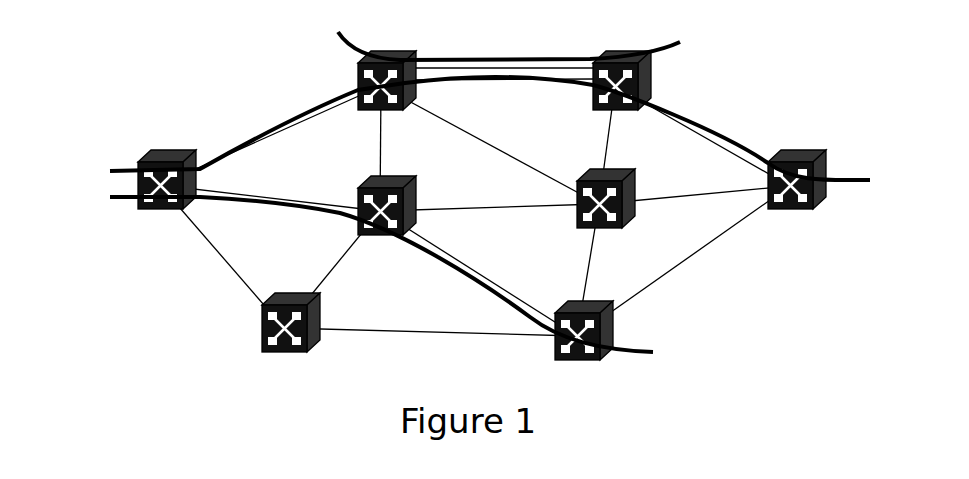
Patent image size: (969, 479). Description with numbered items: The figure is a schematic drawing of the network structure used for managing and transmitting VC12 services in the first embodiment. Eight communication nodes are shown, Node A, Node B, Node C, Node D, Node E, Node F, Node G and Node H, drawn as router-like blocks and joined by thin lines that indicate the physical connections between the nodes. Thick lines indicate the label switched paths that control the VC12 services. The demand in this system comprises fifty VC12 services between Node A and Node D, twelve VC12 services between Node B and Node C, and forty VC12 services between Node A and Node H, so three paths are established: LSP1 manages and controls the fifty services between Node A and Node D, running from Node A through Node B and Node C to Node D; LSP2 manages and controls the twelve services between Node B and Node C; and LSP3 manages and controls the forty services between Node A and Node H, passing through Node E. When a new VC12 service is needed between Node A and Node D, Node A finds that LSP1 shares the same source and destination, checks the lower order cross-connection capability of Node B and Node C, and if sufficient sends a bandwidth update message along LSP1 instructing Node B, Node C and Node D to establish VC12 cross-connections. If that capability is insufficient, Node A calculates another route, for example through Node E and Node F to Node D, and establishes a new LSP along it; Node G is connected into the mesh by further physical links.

The Node A is at (167, 165).
The Node B is at (376, 80).
The Node C is at (632, 80).
The Node D is at (810, 173).
The Node E is at (383, 195).
The Node F is at (593, 203).
The Node G is at (305, 322).
The Node H is at (597, 330).
The element LSP1 is at (462, 129).
The element LSP2 is at (484, 36).
The element LSP3 is at (354, 273).